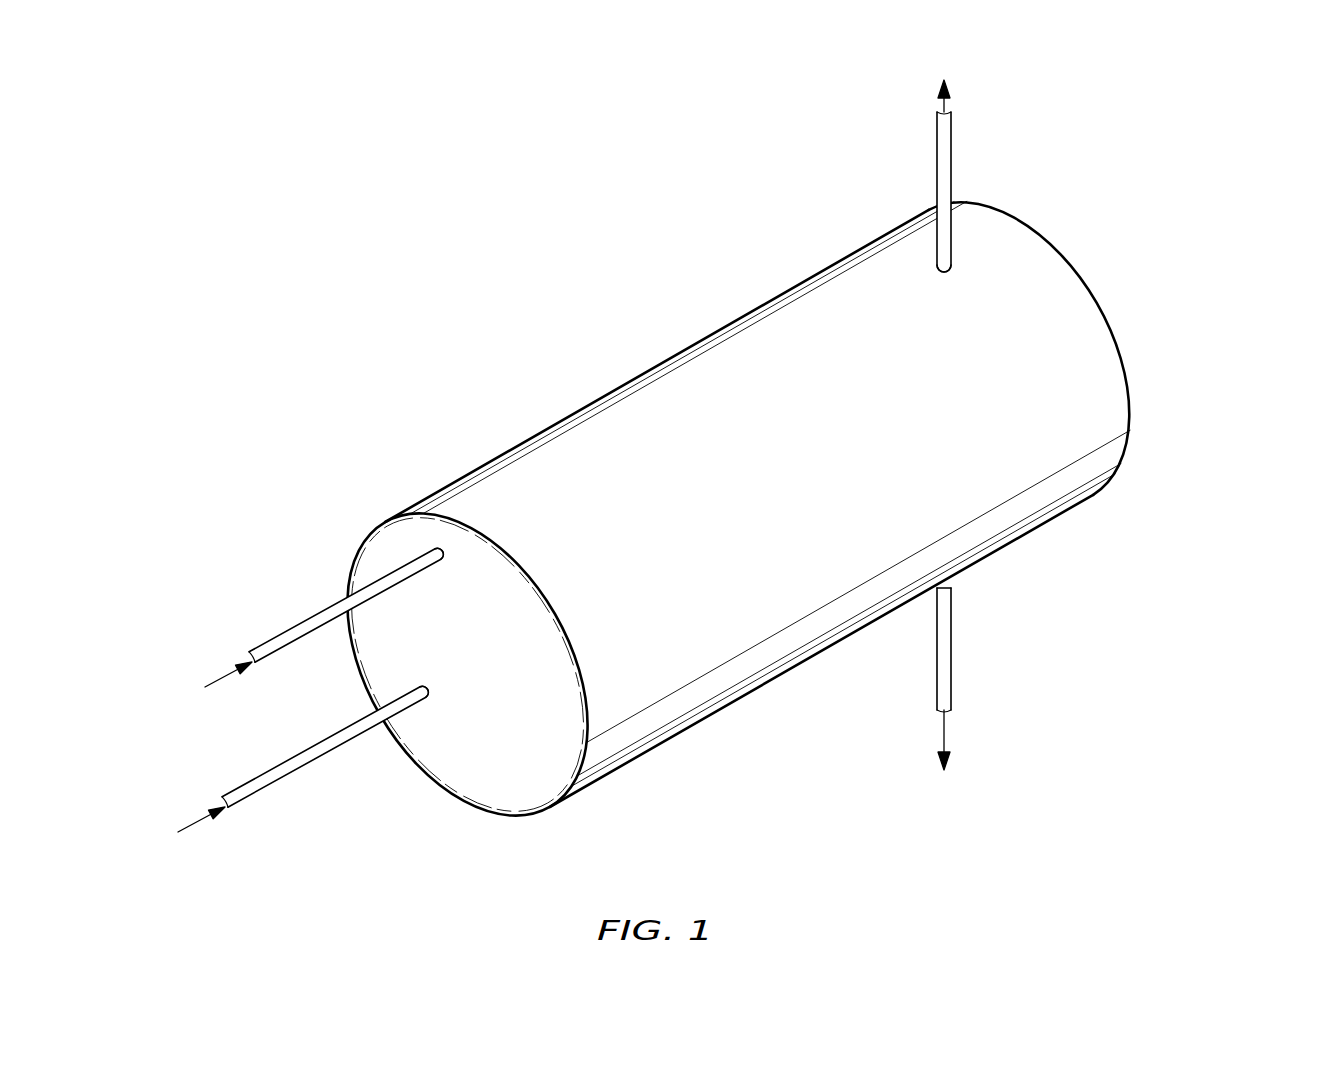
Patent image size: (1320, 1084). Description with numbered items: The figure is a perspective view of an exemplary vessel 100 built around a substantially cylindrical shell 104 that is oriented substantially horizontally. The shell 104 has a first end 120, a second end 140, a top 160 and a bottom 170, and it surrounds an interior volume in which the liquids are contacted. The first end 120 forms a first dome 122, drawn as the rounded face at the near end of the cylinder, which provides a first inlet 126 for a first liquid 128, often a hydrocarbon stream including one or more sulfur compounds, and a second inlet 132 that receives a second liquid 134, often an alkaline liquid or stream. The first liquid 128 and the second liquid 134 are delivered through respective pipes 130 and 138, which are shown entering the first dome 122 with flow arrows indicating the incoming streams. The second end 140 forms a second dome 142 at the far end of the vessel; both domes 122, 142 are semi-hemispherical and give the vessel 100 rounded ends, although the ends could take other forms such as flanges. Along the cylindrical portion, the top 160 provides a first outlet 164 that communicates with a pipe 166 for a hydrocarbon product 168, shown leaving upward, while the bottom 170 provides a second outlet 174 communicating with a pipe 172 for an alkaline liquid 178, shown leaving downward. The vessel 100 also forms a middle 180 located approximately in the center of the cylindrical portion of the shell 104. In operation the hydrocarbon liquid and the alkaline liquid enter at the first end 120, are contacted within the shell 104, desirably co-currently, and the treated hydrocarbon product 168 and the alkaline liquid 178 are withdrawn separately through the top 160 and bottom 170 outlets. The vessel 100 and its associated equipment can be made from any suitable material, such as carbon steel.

The vessel 100 is at (705, 468).
The cylindrical shell 104 is at (572, 417).
The first end 120 is at (467, 665).
The first dome 122 is at (527, 687).
The first inlet 126 is at (424, 699).
The first liquid 128 is at (193, 818).
The pipe 130 is at (333, 742).
The second inlet 132 is at (442, 553).
The second liquid 134 is at (220, 670).
The pipe 138 is at (325, 615).
The second end 140 is at (811, 480).
The second dome 142 is at (1104, 312).
The top 160 is at (738, 318).
The first outlet 164 is at (951, 266).
The pipe 166 is at (947, 182).
The hydrocarbon product 168 is at (947, 100).
The bottom 170 is at (852, 634).
The pipe 172 is at (947, 630).
The second outlet 174 is at (952, 579).
The alkaline liquid 178 is at (947, 724).
The middle 180 is at (683, 353).